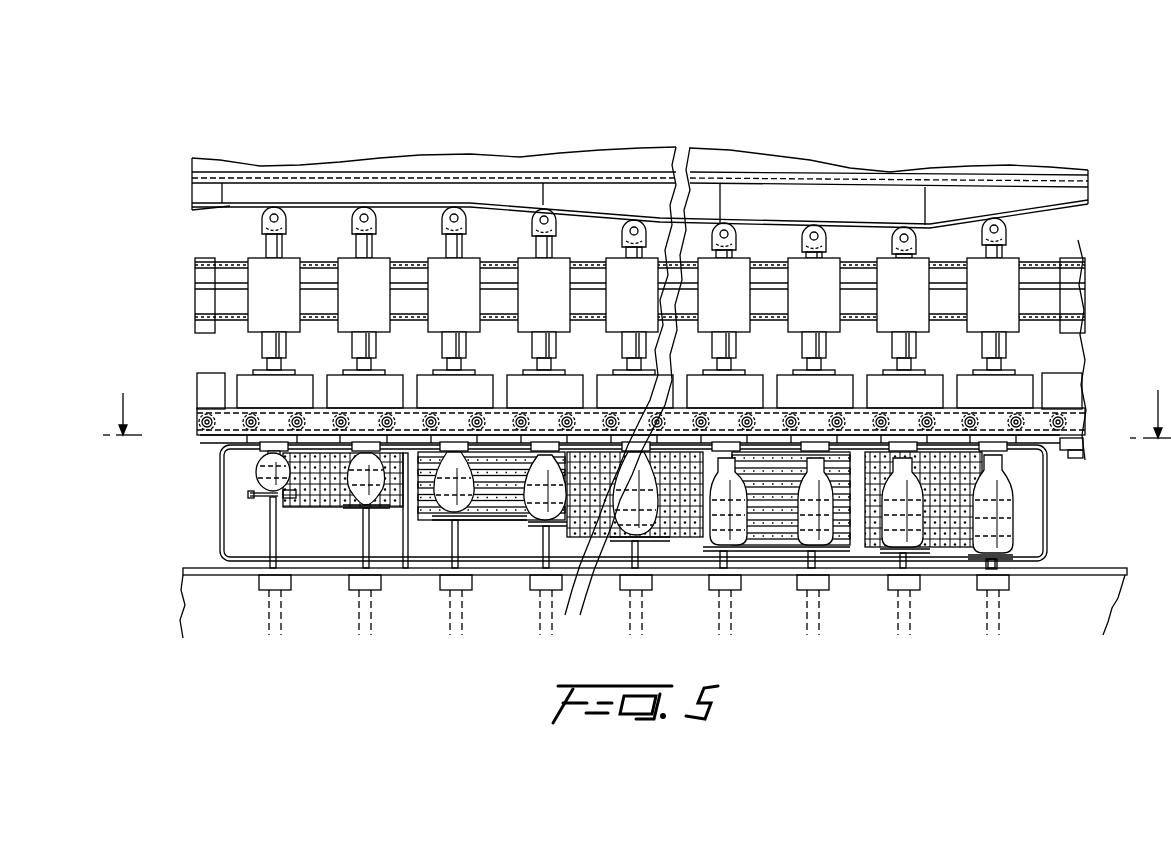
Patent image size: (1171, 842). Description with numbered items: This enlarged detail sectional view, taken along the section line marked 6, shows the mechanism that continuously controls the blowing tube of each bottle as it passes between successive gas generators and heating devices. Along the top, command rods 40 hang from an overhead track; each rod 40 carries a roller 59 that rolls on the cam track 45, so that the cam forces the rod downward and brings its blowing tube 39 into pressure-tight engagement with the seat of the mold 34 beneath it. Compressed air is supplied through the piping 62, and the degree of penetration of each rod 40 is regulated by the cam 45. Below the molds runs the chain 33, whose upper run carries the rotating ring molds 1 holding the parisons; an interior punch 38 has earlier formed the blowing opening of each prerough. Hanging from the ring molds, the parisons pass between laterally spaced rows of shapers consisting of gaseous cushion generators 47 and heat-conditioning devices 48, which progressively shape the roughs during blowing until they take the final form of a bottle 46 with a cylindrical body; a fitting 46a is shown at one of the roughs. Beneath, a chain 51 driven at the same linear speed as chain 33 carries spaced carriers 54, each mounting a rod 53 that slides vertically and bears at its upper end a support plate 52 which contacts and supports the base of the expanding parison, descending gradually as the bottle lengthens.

The rotating ring mold 1 is at (262, 444).
The chain 33 is at (222, 428).
The mold 34 is at (247, 398).
The interior punch 38 is at (256, 362).
The blowing tube 39 is at (247, 322).
The command rod 40 is at (271, 250).
The cam track 45 is at (387, 205).
The bottle 46 is at (1012, 515).
The chamber fitting 46a is at (291, 499).
The gaseous cushion generator 47 is at (406, 510).
The heat-conditioning device 48 is at (497, 518).
The chain 51 is at (198, 574).
The support plate 52 is at (202, 537).
The rod 53 is at (994, 566).
The carrier 54 is at (266, 582).
The roller 59 is at (640, 163).
The piping 62 is at (683, 265).
The section line of FIG. 6 is at (637, 427).